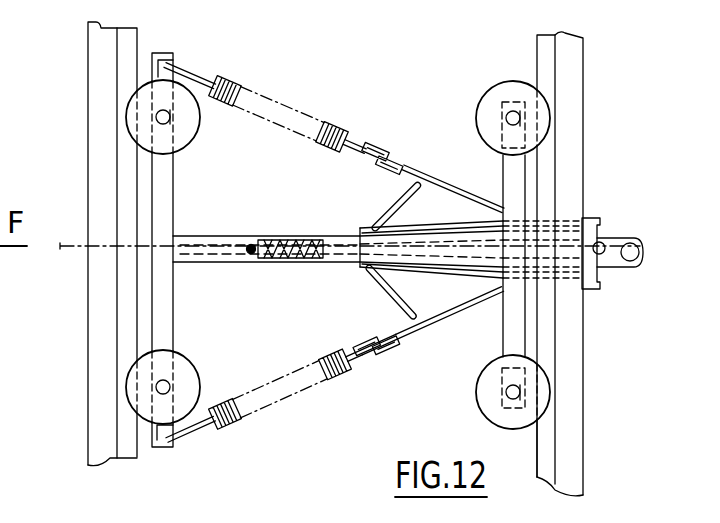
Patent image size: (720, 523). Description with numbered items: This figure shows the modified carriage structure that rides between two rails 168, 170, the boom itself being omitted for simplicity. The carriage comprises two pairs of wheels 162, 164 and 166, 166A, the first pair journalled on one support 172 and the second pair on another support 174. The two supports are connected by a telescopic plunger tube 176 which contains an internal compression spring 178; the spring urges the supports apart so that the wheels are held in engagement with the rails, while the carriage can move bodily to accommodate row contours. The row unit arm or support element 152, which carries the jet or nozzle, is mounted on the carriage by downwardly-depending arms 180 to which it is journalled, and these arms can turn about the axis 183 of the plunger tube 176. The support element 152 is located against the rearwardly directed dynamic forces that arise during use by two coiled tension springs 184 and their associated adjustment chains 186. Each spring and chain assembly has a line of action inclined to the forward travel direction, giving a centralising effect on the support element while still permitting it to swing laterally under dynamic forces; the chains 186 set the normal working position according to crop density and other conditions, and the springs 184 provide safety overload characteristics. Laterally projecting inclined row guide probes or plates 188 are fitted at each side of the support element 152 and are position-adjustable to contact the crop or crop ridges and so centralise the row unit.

The support element 152 is at (642, 268).
The wheel 162 is at (195, 139).
The wheel 164 is at (190, 367).
The wheel 166 is at (547, 387).
The wheel 166A is at (547, 127).
The rail 168 is at (127, 192).
The rail 170 is at (548, 163).
The support 172 is at (167, 197).
The support 174 is at (518, 186).
The telescopic plunger tube 176 is at (322, 263).
The internal compression spring 178 is at (278, 200).
The downwardly-depending arms 180 is at (458, 195).
The axis 183 is at (60, 250).
The coiled tension spring 184 is at (253, 83).
The adjustment chain 186 is at (397, 330).
The row guide probe 188 is at (374, 196).